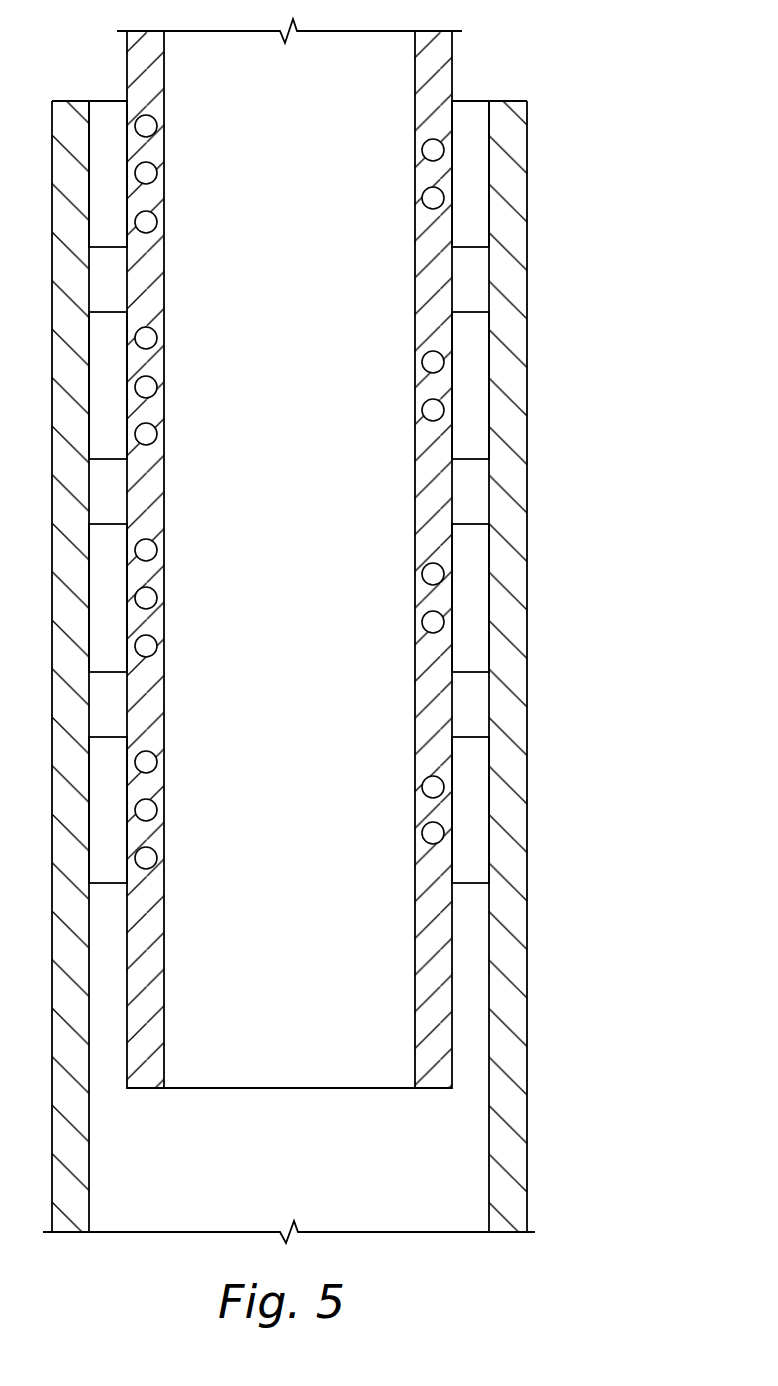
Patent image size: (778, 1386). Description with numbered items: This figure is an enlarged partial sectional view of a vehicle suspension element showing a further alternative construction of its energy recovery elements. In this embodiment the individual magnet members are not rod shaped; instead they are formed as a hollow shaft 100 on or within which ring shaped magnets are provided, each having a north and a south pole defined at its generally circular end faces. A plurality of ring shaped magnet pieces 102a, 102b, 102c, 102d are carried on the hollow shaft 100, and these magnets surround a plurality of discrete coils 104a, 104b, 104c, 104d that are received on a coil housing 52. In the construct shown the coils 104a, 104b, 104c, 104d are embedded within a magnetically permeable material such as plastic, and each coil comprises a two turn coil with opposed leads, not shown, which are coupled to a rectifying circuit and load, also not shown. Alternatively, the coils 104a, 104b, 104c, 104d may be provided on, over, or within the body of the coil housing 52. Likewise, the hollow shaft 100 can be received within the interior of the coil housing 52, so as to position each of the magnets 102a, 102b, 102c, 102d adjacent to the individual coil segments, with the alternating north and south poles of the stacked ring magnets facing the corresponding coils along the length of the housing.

The coil housing 52 is at (453, 70).
The hollow shaft 100 is at (527, 1013).
The ring shaped magnet piece 102a is at (470, 812).
The ring shaped magnet piece 102b is at (470, 600).
The ring shaped magnet piece 102c is at (470, 389).
The ring shaped magnet piece 102d is at (470, 177).
The coil 104a is at (433, 787).
The coil 104b is at (433, 574).
The coil 104c is at (433, 363).
The coil 104d is at (433, 151).